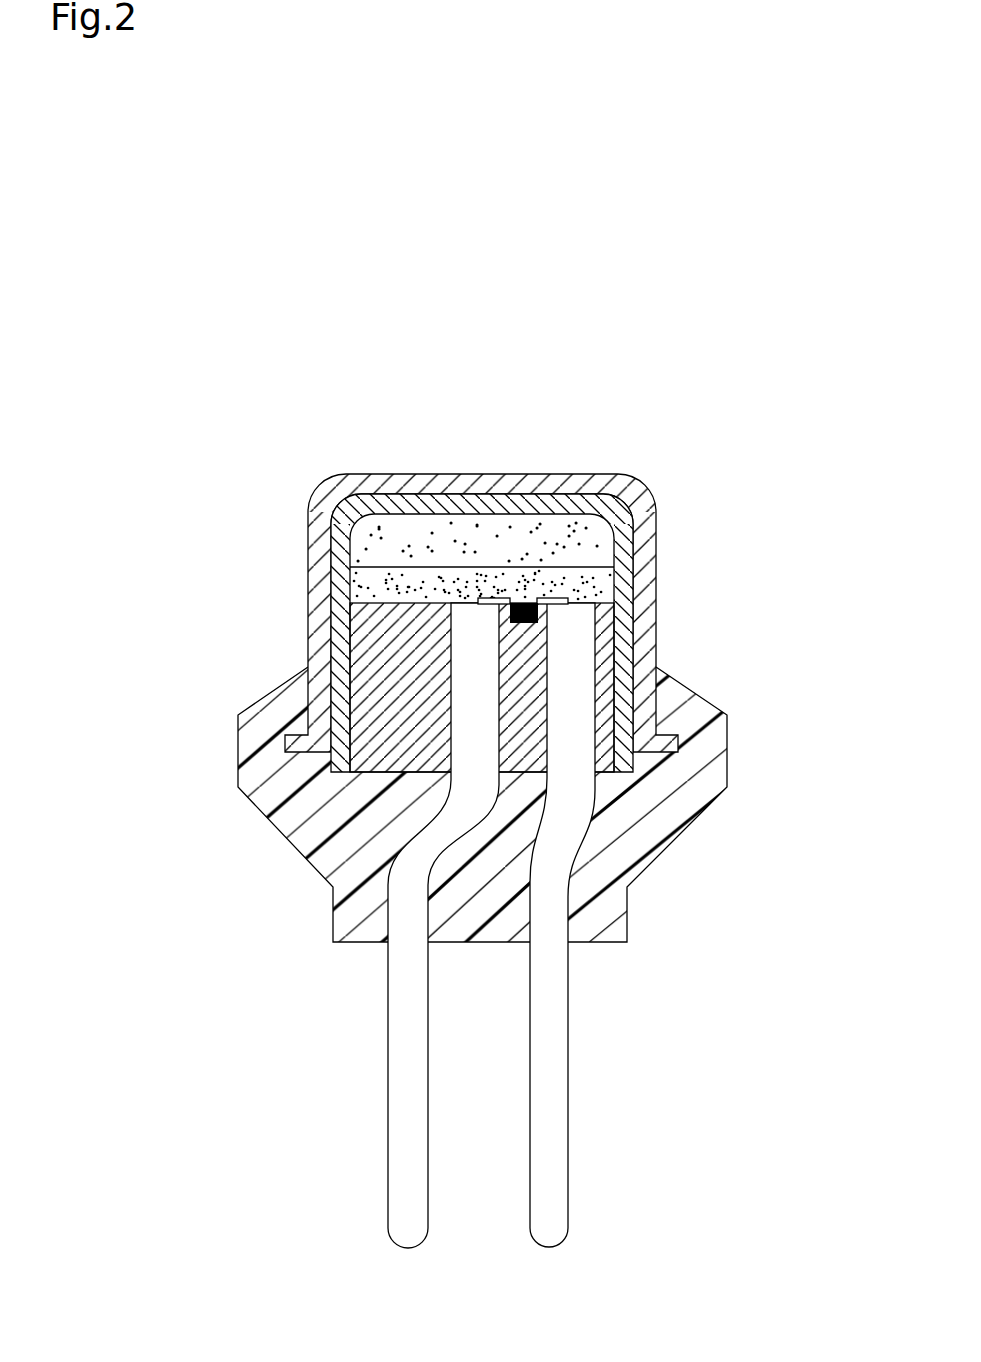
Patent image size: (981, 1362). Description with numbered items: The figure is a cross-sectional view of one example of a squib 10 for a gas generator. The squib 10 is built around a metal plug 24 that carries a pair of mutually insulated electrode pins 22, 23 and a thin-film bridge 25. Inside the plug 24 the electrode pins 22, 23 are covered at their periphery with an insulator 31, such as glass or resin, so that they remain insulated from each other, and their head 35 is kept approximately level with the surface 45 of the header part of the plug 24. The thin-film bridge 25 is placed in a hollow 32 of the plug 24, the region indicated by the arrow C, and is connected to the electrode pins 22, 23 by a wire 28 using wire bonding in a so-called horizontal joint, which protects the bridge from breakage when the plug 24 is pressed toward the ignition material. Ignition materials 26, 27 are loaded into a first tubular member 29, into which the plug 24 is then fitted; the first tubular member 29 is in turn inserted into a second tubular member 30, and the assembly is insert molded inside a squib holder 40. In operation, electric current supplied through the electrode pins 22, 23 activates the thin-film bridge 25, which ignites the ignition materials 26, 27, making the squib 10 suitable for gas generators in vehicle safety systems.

The squib 10 is at (612, 373).
The electrode pin 22 is at (408, 1247).
The electrode pin 23 is at (548, 1245).
The plug 24 is at (612, 677).
The thin-film bridge 25 is at (528, 622).
The ignition material 26 is at (423, 577).
The ignition material 27 is at (472, 520).
The wire 28 is at (497, 600).
The first tubular member 29 is at (637, 543).
The second tubular member 30 is at (645, 497).
The insulator 31 is at (628, 722).
The hollow 32 is at (498, 612).
The head 35 is at (350, 583).
The squib holder 40 is at (622, 903).
The surface of the header part 45 is at (452, 603).
The arrow C is at (527, 577).